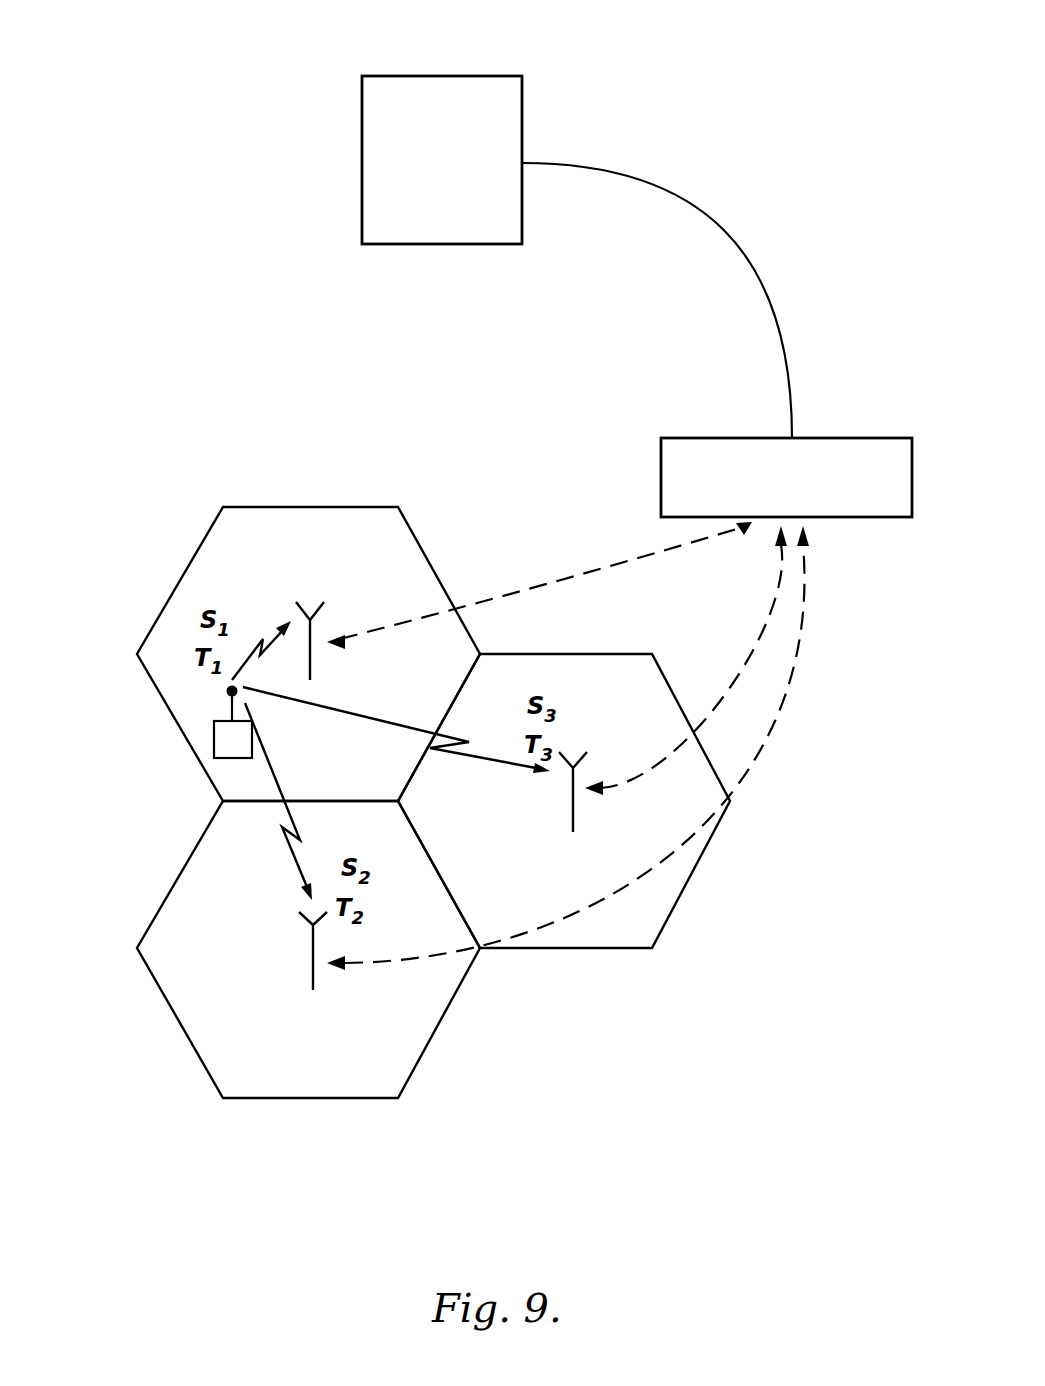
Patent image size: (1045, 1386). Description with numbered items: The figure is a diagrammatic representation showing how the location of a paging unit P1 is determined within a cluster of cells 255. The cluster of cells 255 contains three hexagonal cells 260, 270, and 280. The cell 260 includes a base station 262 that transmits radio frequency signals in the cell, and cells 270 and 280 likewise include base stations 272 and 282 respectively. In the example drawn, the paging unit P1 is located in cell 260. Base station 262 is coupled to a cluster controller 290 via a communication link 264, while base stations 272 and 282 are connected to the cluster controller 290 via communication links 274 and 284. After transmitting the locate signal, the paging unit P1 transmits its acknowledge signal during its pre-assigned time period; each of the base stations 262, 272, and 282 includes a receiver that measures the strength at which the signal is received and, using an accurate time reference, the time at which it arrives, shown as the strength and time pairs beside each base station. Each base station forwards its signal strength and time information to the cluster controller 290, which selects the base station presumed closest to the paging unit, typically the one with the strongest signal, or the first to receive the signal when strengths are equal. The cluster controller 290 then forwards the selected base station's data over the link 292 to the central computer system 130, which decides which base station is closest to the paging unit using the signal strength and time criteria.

The central computer system 130 is at (443, 76).
The communication link 292 is at (725, 229).
The cluster controller 290 is at (661, 468).
The cluster of cells 255 is at (145, 492).
The cell 260 is at (305, 507).
The cell 270 is at (330, 1098).
The cell 280 is at (690, 888).
The base station 262 is at (310, 668).
The base station 272 is at (313, 978).
The base station 282 is at (573, 810).
The communication link 264 is at (557, 583).
The communication link 274 is at (767, 713).
The communication link 284 is at (752, 672).
The paging unit P1 is at (214, 738).